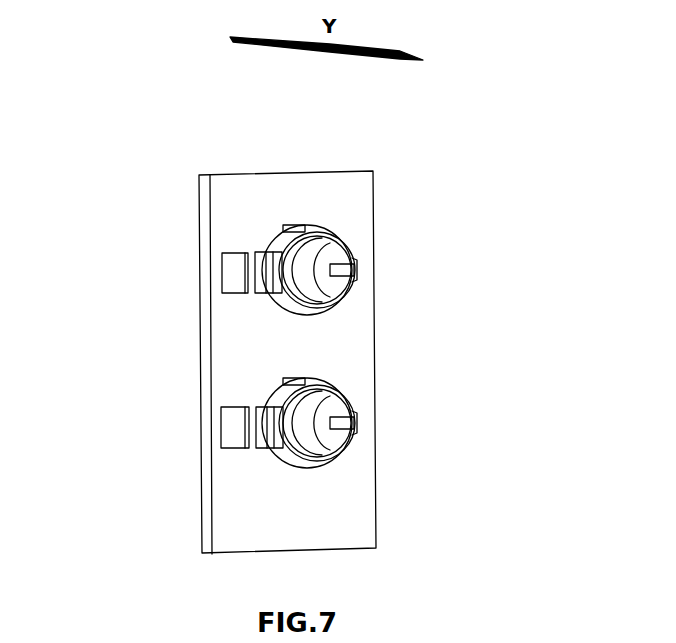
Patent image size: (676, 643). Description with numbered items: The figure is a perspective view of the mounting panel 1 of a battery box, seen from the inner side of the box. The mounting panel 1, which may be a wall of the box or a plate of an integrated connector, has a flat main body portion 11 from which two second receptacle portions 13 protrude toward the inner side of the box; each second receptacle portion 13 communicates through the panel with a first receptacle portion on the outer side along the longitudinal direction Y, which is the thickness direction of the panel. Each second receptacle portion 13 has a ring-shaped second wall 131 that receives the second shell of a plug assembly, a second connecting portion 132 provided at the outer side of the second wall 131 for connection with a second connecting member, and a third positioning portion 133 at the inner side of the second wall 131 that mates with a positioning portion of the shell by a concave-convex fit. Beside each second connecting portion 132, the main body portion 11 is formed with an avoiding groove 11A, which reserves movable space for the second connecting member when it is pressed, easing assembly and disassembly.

The mounting panel 1 is at (92, 160).
The main body portion 11 is at (352, 356).
The avoiding groove 11A is at (235, 280).
The second receptacle portion 13 is at (363, 122).
The second wall 131 is at (283, 240).
The second connecting portion 132 is at (262, 270).
The third positioning portion 133 is at (312, 232).